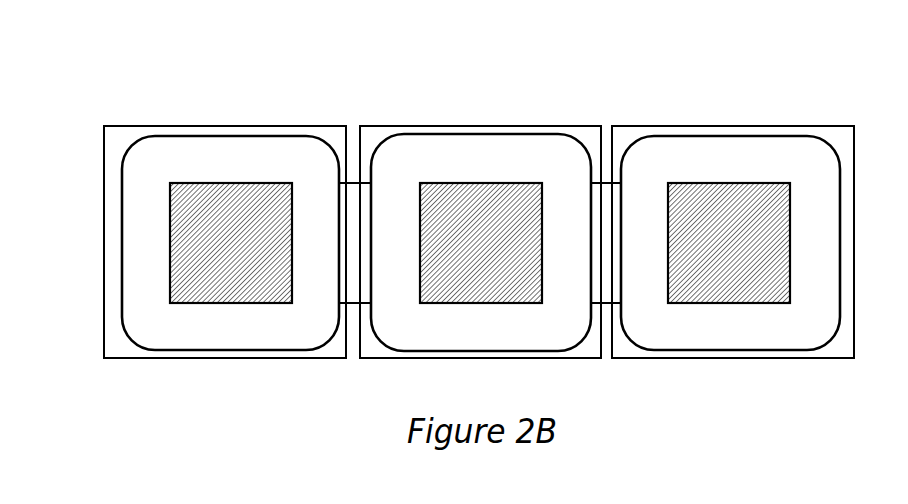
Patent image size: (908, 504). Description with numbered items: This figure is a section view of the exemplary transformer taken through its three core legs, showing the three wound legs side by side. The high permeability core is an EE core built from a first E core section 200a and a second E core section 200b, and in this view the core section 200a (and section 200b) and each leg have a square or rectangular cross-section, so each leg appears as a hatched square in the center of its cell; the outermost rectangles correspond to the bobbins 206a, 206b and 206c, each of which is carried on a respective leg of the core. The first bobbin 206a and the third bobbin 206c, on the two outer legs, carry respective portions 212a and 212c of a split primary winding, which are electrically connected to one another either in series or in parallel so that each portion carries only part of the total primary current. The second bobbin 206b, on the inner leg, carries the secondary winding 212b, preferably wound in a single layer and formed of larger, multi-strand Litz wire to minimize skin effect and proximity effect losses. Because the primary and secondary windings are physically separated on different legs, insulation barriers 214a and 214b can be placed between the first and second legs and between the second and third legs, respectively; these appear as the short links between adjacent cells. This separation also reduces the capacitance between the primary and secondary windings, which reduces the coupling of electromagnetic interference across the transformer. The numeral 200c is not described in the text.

The first E core section 200a is at (217, 183).
The second E core section 200b is at (437, 183).
The die / chip 200c is at (700, 183).
The first bobbin 206a is at (305, 125).
The second bobbin 206b is at (528, 125).
The third bobbin 206c is at (782, 125).
The primary winding portion 212a is at (180, 135).
The secondary winding 212b is at (427, 133).
The primary winding portion 212c is at (675, 135).
The insulation barrier 214a is at (352, 190).
The insulation barrier 214b is at (607, 190).